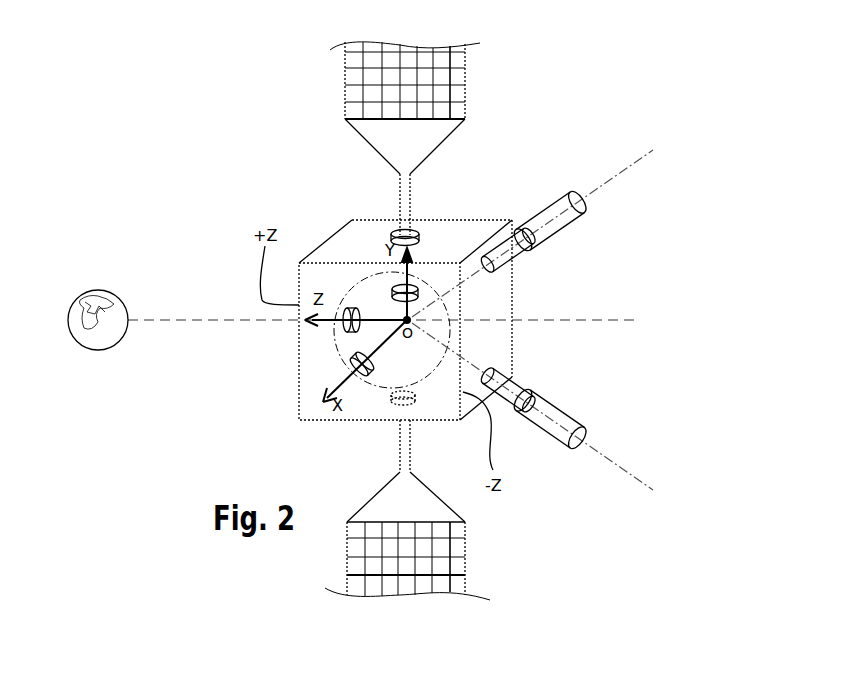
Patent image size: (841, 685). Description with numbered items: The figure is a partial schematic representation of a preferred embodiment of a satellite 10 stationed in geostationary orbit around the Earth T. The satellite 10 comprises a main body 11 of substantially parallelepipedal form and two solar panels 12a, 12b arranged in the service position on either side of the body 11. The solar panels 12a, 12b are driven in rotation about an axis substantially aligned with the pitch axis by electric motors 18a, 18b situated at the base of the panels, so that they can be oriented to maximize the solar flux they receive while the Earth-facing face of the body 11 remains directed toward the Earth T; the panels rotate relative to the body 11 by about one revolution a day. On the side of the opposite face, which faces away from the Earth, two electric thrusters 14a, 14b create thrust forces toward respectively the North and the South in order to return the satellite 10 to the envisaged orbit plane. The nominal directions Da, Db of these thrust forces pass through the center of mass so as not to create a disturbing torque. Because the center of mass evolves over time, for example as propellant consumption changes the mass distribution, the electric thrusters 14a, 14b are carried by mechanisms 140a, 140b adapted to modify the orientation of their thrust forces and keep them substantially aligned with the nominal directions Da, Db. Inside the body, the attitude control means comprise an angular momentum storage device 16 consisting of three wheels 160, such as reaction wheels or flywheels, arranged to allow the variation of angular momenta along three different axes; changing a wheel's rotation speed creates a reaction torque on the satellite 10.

The satellite 10 is at (254, 153).
The main body 11 is at (330, 238).
The solar panel 12a is at (443, 88).
The solar panel 12b is at (443, 563).
The electric thruster 14a is at (547, 208).
The electric thruster 14b is at (548, 430).
The mechanism 140a is at (530, 245).
The mechanism 140b is at (527, 400).
The angular momentum storage device 16 is at (445, 372).
The wheels 160 is at (345, 322).
The electric motor 18a is at (390, 238).
The electric motor 18b is at (393, 401).
The Earth T is at (112, 292).
The nominal direction Da is at (617, 173).
The nominal direction Db is at (627, 473).